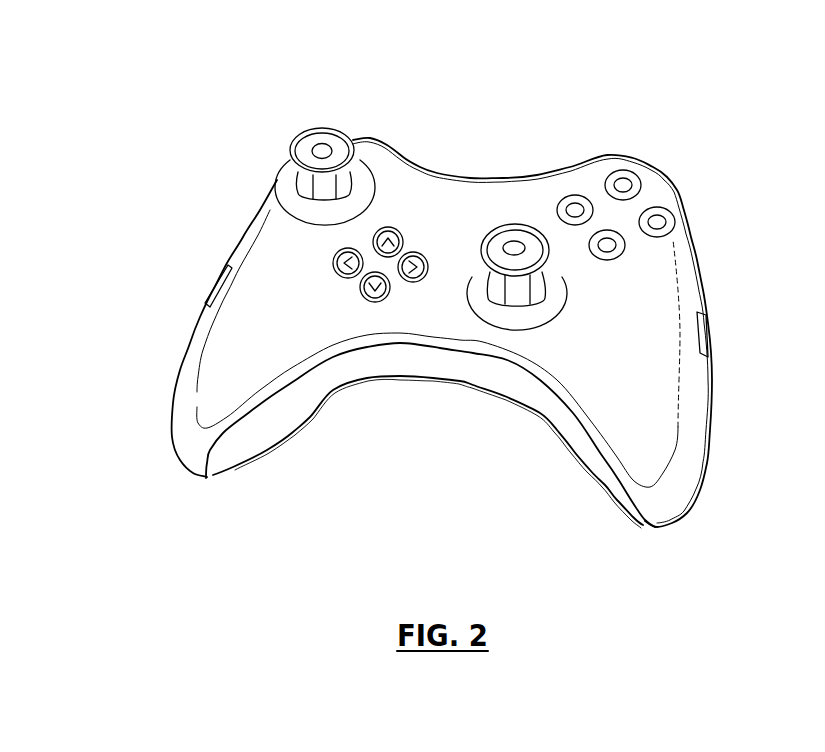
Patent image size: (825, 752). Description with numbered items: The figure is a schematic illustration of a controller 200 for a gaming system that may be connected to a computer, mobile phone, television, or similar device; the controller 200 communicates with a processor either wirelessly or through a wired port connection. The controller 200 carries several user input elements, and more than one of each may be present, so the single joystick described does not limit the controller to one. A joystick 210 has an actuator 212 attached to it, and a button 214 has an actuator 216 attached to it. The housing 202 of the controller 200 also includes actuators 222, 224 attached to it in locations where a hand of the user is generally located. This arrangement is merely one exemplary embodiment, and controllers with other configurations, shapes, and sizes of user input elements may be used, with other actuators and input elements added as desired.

The controller 200 is at (484, 333).
The housing 202 is at (688, 283).
The joystick 210 is at (512, 203).
The actuator 212 is at (483, 248).
The button 214 is at (626, 185).
The actuator 216 is at (643, 184).
The actuator 222 is at (703, 335).
The actuator 224 is at (214, 292).